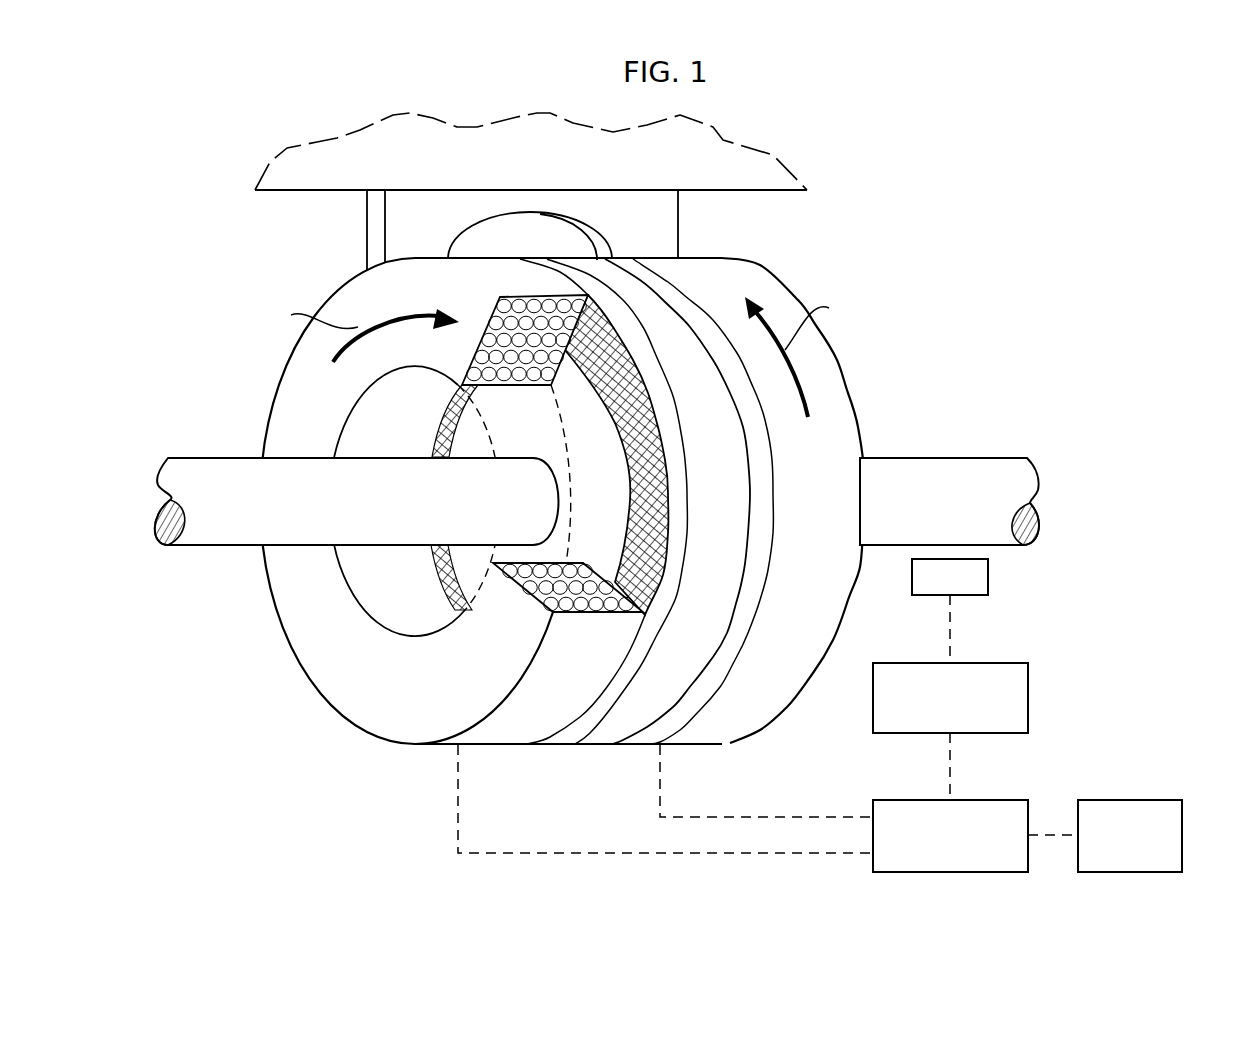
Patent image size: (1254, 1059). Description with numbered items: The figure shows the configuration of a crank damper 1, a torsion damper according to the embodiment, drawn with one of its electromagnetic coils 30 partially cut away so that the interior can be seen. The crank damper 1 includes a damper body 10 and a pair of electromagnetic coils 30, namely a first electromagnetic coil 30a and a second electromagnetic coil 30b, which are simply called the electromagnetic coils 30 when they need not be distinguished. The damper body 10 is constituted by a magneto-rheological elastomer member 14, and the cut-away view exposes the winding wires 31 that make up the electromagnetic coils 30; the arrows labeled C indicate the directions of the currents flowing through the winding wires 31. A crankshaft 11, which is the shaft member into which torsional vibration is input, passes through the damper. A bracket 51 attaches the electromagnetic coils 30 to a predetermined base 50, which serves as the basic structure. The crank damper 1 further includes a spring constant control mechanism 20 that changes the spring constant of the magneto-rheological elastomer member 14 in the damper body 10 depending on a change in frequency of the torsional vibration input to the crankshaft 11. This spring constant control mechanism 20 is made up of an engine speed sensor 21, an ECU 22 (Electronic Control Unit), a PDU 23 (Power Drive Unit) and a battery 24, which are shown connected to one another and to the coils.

The crank damper 1 is at (897, 213).
The damper body 10 is at (672, 340).
The crankshaft 11 is at (946, 458).
The magneto-rheological elastomer member 14 is at (598, 308).
The spring constant control mechanism 20 is at (1099, 726).
The engine speed sensor 21 is at (989, 577).
The ECU 22 is at (987, 663).
The PDU 23 is at (987, 800).
The battery 24 is at (1143, 800).
The electromagnetic coils 30 is at (628, 535).
The first electromagnetic coil 30a is at (322, 703).
The second electromagnetic coil 30b is at (841, 372).
The winding wires 31 is at (529, 377).
The base 50 is at (690, 153).
The bracket 51 is at (367, 231).